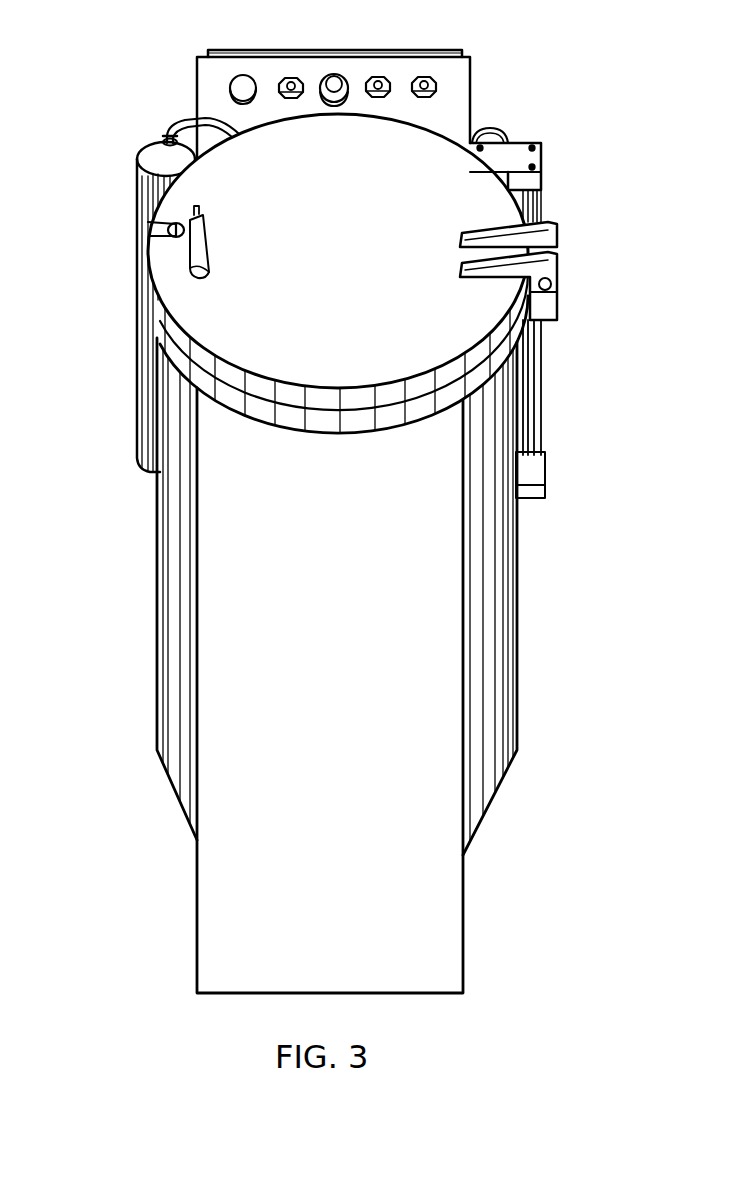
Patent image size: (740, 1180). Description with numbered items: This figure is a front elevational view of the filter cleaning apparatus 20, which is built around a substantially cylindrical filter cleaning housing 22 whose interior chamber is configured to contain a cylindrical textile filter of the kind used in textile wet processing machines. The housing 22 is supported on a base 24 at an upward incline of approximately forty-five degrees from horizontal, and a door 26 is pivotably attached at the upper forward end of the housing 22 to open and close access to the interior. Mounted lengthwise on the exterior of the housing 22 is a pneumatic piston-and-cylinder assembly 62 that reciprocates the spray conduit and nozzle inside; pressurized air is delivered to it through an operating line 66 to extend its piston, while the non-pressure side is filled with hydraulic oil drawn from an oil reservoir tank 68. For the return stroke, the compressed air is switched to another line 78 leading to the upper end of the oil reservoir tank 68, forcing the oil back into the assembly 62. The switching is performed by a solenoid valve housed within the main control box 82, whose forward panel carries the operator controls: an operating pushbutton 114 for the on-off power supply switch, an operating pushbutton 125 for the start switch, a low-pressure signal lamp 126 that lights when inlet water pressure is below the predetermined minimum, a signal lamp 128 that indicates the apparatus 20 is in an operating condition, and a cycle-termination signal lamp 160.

The filter cleaning apparatus 20 is at (557, 473).
The filter cleaning housing 22 is at (505, 645).
The base 24 is at (440, 946).
The door 26 is at (234, 318).
The pneumatic piston-and-cylinder assembly 62 is at (535, 370).
The operating line 66 is at (500, 140).
The oil reservoir tank 68 is at (136, 195).
The line 78 is at (178, 122).
The main control box 82 is at (455, 76).
The operating pushbutton 114 is at (237, 90).
The operating pushbutton 125 is at (426, 80).
The low-pressure signal lamp 126 is at (291, 85).
The signal lamp 128 is at (379, 84).
The cycle-termination signal lamp 160 is at (333, 80).